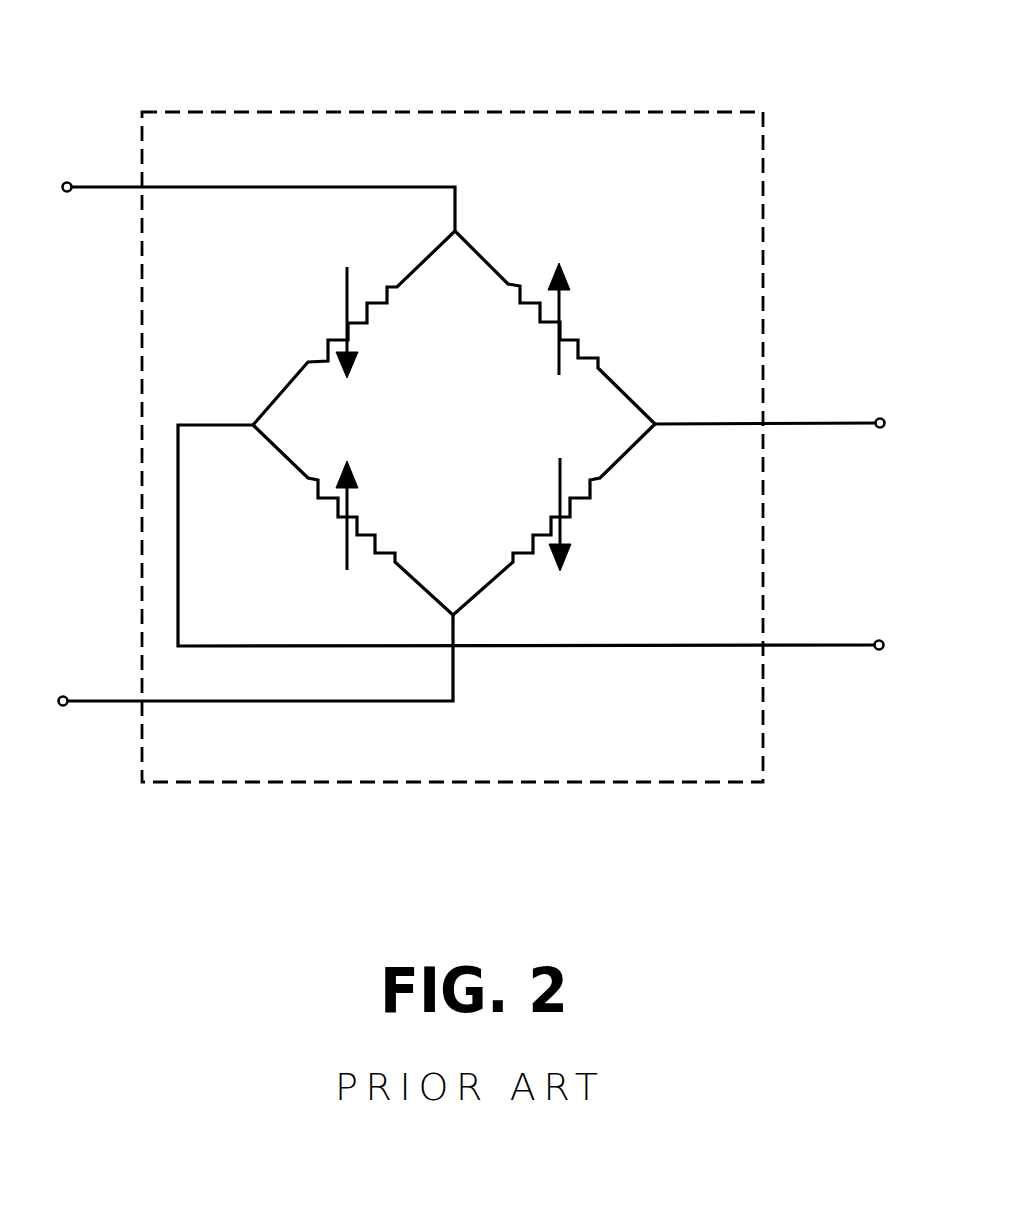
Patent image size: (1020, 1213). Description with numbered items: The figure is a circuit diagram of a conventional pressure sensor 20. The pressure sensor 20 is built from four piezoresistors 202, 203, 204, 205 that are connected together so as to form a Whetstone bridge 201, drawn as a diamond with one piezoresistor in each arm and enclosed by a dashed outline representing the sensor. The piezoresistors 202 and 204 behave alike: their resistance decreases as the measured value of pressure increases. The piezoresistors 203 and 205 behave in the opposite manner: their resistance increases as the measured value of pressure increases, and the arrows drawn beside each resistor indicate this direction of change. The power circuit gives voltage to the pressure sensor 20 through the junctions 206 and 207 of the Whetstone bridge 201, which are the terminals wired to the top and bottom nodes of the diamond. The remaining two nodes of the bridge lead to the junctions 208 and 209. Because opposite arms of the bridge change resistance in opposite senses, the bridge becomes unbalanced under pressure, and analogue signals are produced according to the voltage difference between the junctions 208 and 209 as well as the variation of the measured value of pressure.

The pressure sensor 20 is at (405, 88).
The Whetstone bridge 201 is at (566, 112).
The piezoresistor 202 is at (317, 315).
The piezoresistor 203 is at (332, 528).
The piezoresistor 204 is at (578, 520).
The piezoresistor 205 is at (578, 318).
The junction 206 is at (90, 168).
The junction 207 is at (63, 712).
The junction 208 is at (877, 407).
The junction 209 is at (880, 658).